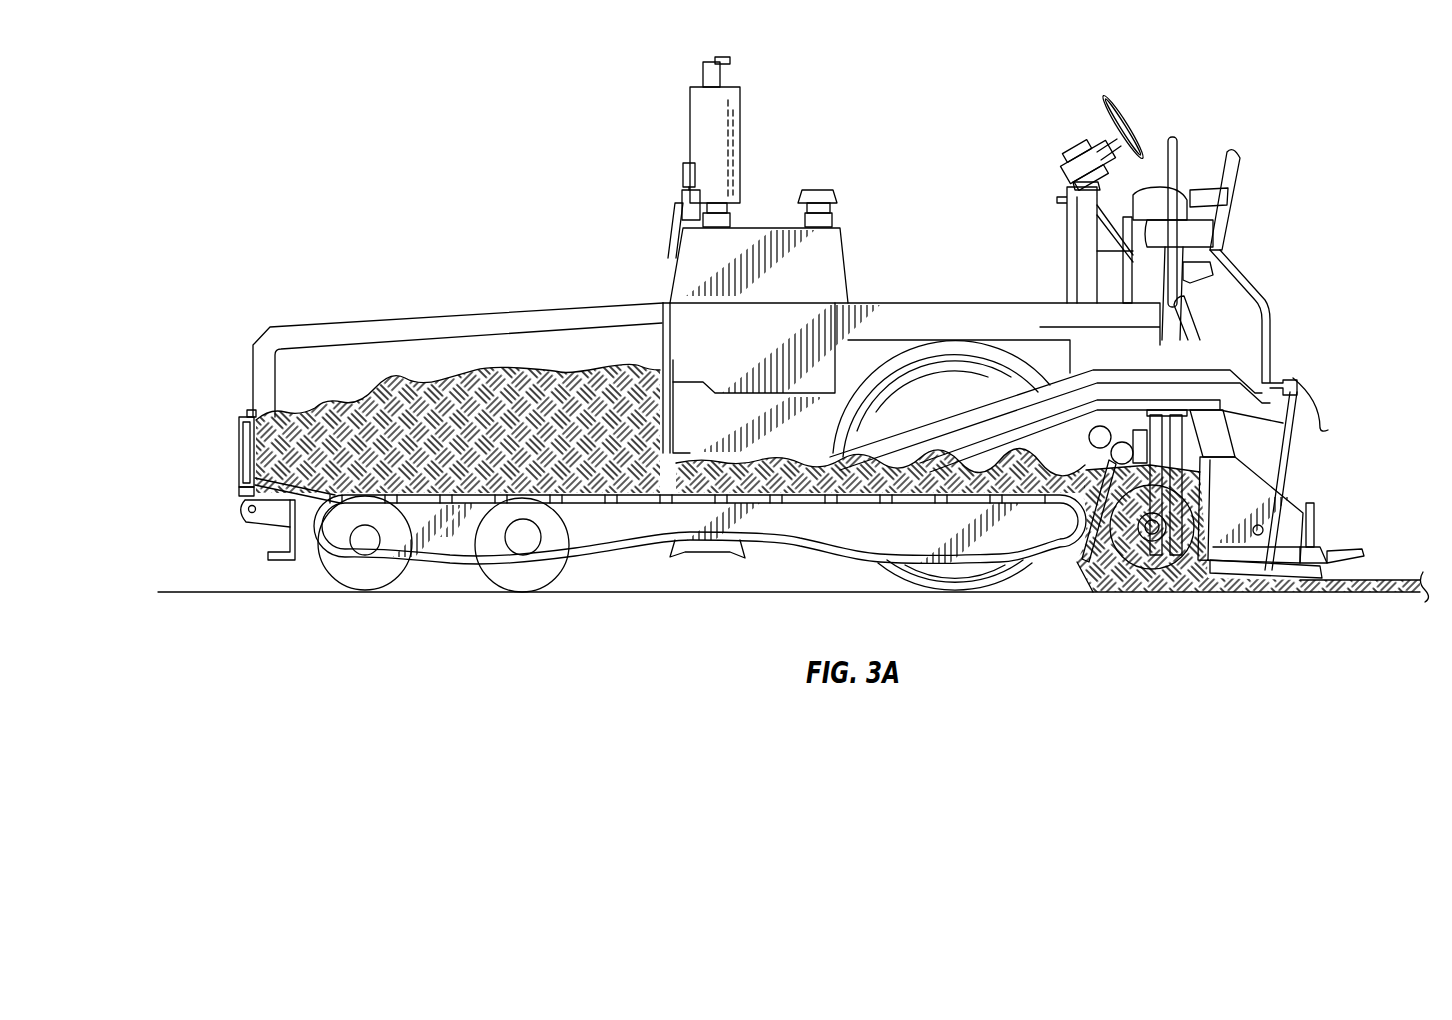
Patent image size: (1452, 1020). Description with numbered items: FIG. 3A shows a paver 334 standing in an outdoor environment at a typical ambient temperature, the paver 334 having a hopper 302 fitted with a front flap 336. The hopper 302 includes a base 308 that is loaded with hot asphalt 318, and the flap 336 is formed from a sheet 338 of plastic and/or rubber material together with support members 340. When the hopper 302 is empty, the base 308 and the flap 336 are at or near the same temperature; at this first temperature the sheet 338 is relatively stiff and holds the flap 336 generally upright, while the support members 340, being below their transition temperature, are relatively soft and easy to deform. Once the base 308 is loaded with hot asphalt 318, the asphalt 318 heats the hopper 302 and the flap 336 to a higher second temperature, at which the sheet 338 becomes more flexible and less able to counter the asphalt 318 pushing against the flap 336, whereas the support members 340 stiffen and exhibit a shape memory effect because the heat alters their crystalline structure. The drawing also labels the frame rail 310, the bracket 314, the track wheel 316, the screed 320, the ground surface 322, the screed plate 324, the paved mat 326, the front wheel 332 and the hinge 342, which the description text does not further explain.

The hopper 302 is at (372, 368).
The base 308 is at (447, 497).
The frame rail 310 is at (453, 325).
The push roller bracket 314 is at (236, 498).
The track wheel 316 is at (607, 503).
The asphalt 318 is at (335, 420).
The screed 320 is at (1247, 493).
The ground surface 322 is at (196, 594).
The screed plate 324 is at (1265, 568).
The paved mat 326 is at (1378, 582).
The front wheel 332 is at (370, 575).
The paver 334 is at (256, 182).
The flap 336 is at (238, 446).
The sheet 338 is at (238, 430).
The support members 340 is at (238, 468).
The hinge 342 is at (246, 412).